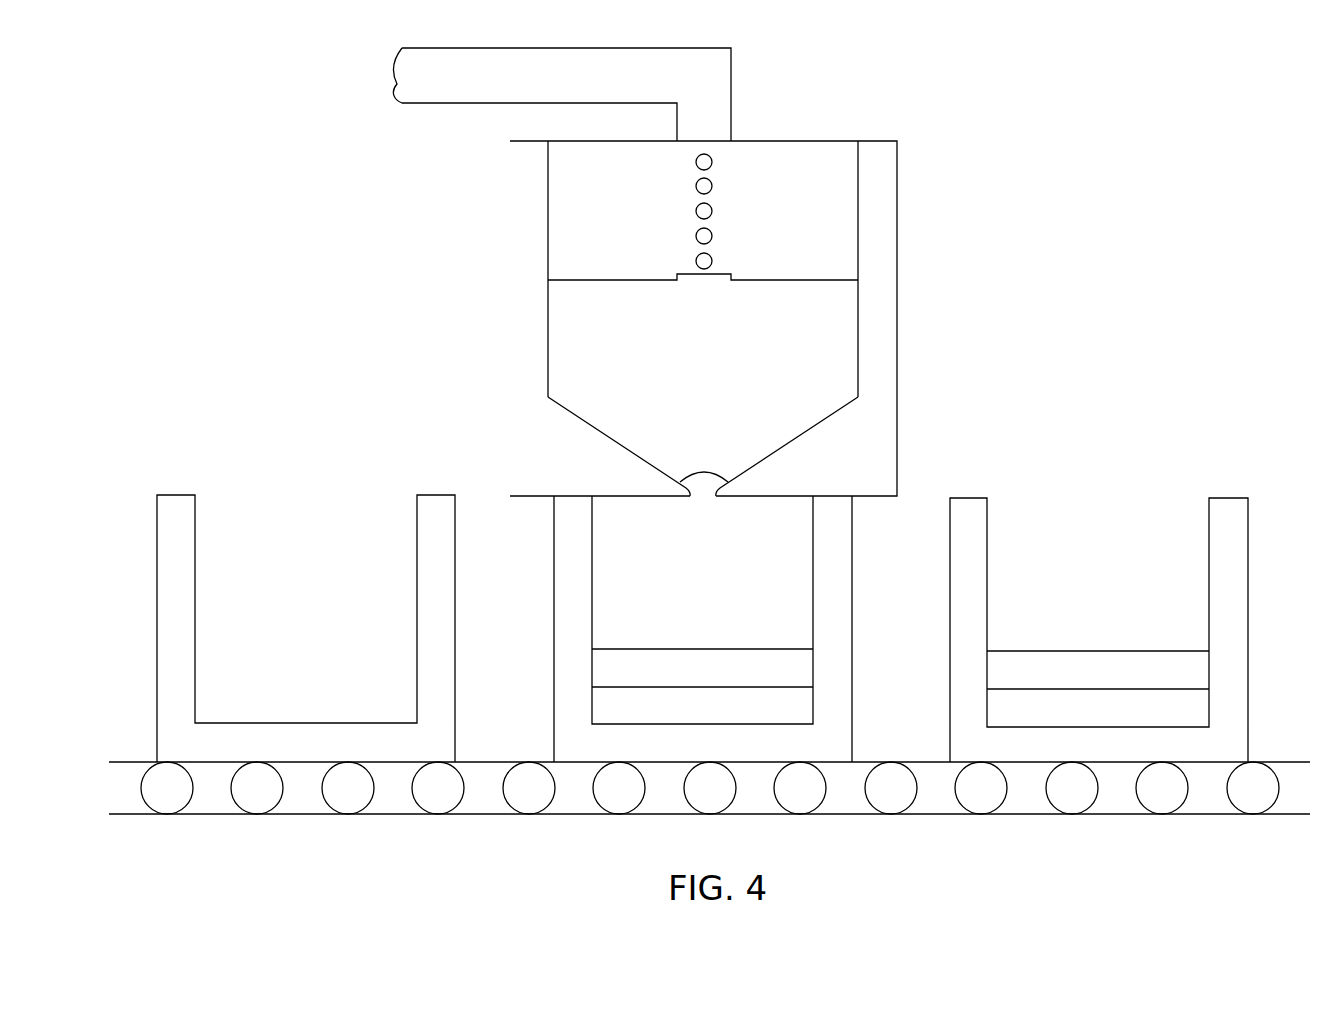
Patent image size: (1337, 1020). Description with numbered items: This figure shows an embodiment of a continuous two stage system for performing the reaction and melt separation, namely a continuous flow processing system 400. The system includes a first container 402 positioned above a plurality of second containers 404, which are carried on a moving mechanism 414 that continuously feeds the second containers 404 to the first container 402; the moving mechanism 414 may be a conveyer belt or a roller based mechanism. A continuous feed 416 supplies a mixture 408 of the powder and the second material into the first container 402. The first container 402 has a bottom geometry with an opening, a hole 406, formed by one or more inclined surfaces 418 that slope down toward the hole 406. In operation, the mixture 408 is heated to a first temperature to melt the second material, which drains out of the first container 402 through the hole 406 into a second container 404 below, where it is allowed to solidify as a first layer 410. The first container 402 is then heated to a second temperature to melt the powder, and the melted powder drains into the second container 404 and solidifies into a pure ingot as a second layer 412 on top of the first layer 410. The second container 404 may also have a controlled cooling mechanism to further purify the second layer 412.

The continuous flow processing system 400 is at (1052, 62).
The first container 402 is at (898, 253).
The second containers 404 is at (455, 572).
The hole 406 is at (702, 493).
The mixture 408 is at (730, 324).
The first layer 410 is at (726, 716).
The second layer 412 is at (726, 678).
The moving mechanism 414 is at (844, 797).
The continuous feed 416 is at (732, 80).
The inclined surfaces 418 is at (582, 417).